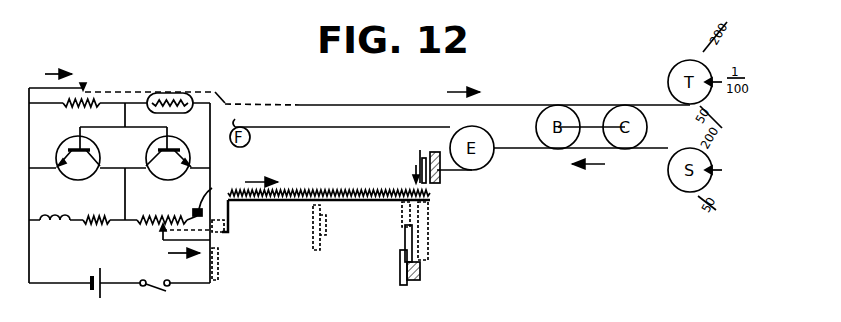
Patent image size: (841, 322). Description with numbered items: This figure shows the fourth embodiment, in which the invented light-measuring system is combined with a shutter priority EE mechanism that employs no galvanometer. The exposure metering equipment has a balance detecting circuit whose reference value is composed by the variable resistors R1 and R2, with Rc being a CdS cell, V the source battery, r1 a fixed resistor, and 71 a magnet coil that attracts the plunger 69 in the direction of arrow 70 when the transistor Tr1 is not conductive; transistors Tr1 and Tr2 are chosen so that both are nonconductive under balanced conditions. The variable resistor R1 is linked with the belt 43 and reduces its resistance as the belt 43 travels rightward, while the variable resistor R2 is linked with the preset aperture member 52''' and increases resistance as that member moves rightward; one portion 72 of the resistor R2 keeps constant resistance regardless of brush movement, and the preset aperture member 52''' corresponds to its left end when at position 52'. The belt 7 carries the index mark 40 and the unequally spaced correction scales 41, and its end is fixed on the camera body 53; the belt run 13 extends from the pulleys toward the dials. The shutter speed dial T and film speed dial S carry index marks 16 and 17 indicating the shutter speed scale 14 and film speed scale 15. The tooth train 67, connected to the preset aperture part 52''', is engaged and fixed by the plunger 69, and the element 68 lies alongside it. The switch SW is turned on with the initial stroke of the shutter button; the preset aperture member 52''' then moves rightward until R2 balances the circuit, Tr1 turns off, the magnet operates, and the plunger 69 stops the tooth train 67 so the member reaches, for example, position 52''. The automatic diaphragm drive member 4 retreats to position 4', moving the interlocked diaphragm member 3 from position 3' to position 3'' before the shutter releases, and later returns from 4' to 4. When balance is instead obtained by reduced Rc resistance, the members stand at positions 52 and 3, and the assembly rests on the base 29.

The variable resistor R1 is at (75, 116).
The CdS cell Rc is at (170, 93).
The transistor Tr1 is at (77, 171).
The transistor Tr2 is at (166, 171).
The magnet coil 71 is at (55, 226).
The fixed resistor r1 is at (96, 230).
The variable resistor R2 is at (159, 234).
The source battery V is at (86, 292).
The switch SW is at (157, 300).
The resistor portion 72 is at (217, 192).
The retreated position of automatic diaphragm drive member 4' is at (216, 266).
The index mark 40 is at (270, 127).
The correction scales 41 is at (322, 118).
The belt 43 is at (518, 105).
The tape run 13 is at (648, 105).
The belt 7 is at (340, 127).
The shutter speed scale 14 is at (705, 46).
The index mark 16 is at (718, 76).
The index mark 17 is at (718, 166).
The film speed scale 15 is at (700, 200).
The tooth train 67 is at (305, 190).
The support bracket 68 is at (258, 182).
The camera body 53 is at (431, 157).
The plunger 69 is at (420, 160).
The arrow 70 is at (410, 170).
The preset aperture member position 52 is at (435, 215).
The preset aperture member position 52' is at (389, 228).
The preset aperture member position 52'' is at (291, 227).
The preset aperture member 52''' is at (248, 257).
The diaphragm member 3 is at (433, 243).
The diaphragm member position 3' is at (426, 269).
The diaphragm member position 3'' is at (341, 238).
The automatic diaphragm drive member 4 is at (381, 263).
The base 29 is at (410, 285).